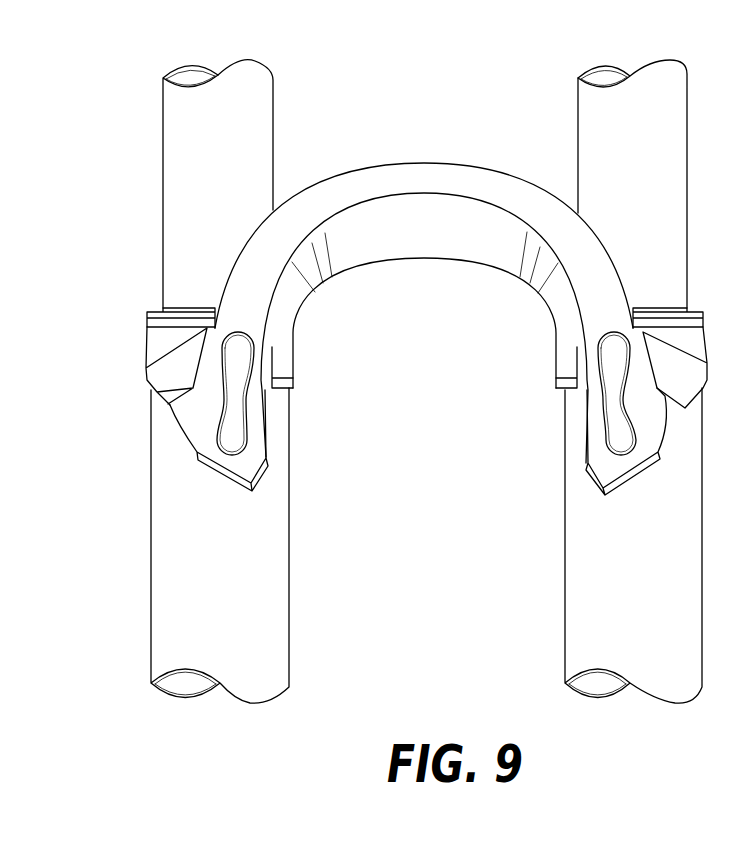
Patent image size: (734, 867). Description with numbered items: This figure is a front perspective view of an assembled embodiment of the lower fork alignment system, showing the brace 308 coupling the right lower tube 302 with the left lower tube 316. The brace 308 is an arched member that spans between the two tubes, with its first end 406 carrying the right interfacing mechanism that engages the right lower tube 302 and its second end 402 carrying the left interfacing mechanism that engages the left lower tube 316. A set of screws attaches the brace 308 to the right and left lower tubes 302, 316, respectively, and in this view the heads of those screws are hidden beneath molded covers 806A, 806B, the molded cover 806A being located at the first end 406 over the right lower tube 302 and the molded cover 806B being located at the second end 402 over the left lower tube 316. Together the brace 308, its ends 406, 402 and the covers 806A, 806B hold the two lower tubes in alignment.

The brace 308 is at (417, 178).
The right lower tube 302 is at (289, 582).
The left lower tube 316 is at (565, 540).
The first end 406 is at (267, 463).
The second end 402 is at (587, 463).
The molded cover 806A is at (237, 375).
The molded cover 806B is at (617, 390).